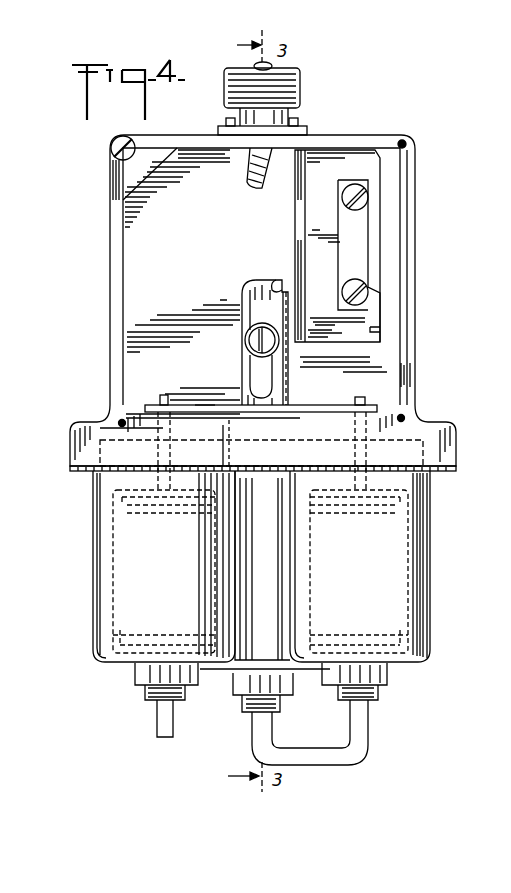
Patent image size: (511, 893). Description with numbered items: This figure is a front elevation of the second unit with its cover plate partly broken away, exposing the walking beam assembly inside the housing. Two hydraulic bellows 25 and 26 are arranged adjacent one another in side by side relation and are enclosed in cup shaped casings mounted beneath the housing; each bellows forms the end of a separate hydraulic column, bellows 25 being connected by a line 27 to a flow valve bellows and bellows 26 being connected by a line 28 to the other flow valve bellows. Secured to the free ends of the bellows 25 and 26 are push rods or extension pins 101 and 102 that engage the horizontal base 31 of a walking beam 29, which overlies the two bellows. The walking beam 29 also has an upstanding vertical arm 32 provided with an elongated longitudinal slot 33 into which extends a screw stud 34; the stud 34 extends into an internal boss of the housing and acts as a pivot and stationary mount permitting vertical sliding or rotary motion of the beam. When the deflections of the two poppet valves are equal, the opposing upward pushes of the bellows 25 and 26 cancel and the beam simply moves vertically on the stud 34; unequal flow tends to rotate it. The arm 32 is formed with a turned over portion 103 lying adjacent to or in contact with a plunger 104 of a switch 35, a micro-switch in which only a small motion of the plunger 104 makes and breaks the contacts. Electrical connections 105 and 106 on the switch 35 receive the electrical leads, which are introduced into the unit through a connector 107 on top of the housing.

The connector 107 is at (300, 84).
The switch 35 is at (332, 213).
The electrical connection 105 is at (368, 195).
The electrical connection 106 is at (352, 282).
The plunger 104 is at (282, 288).
The vertical arm 32 is at (247, 287).
The turned over portion 103 is at (288, 320).
The screw stud 34 is at (254, 340).
The longitudinal slot 33 is at (259, 380).
The horizontal base 31 is at (311, 405).
The push rod 101 is at (165, 395).
The push rod 102 is at (360, 397).
The walking beam 29 is at (205, 400).
The bellows 25 is at (113, 513).
The bellows 26 is at (380, 513).
The line 27 is at (176, 728).
The line 28 is at (350, 722).